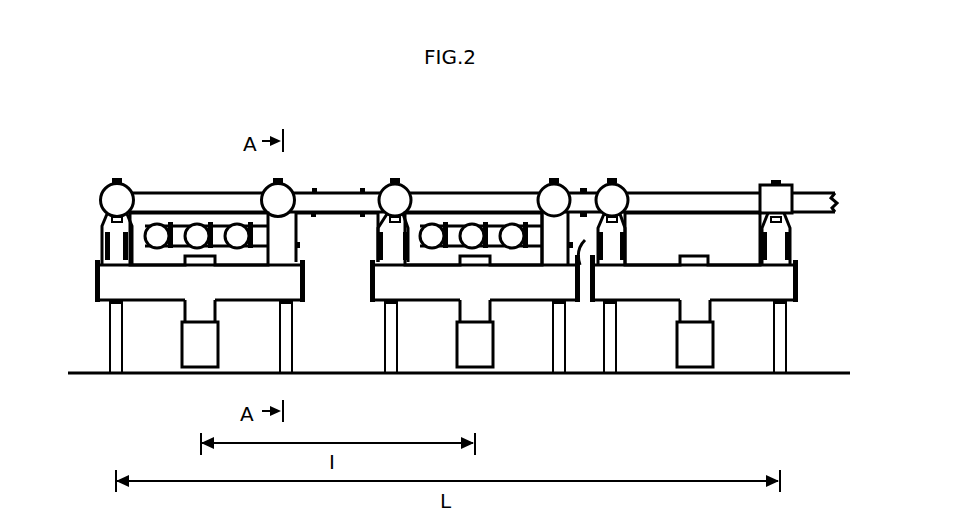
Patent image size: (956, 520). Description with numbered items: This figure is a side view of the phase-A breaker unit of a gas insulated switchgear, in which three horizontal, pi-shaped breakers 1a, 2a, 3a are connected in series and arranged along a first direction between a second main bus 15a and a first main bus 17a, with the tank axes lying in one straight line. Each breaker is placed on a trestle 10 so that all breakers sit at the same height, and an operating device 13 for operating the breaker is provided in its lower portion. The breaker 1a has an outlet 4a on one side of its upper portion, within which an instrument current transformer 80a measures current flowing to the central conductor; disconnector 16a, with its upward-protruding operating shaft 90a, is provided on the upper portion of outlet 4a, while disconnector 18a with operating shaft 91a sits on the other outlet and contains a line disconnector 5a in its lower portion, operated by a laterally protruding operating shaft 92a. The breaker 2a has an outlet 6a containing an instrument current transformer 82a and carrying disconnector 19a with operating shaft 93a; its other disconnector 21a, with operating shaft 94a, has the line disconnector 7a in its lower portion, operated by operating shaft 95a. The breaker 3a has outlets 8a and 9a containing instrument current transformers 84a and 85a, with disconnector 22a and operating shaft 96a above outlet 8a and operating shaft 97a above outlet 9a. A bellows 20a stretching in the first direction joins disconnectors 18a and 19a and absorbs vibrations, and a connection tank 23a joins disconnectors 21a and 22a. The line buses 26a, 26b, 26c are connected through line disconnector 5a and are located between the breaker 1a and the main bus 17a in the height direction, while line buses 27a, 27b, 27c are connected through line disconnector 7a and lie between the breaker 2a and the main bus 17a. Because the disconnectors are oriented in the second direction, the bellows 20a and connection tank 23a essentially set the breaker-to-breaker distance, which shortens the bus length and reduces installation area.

The breaker 1a is at (150, 303).
The breaker 2a is at (420, 303).
The breaker 3a is at (643, 303).
The outlet 4a is at (106, 245).
The line disconnector 5a is at (305, 268).
The outlet 6a is at (380, 246).
The line disconnector 7a is at (555, 262).
The outlet 8a is at (615, 248).
The outlet 9a is at (778, 245).
The trestle 10 is at (116, 350).
The operating device 13 is at (203, 350).
The main bus 15a is at (818, 200).
The disconnector 16a is at (112, 193).
The main bus 17a is at (142, 200).
The disconnector 18a is at (290, 192).
The disconnector 19a is at (388, 185).
The bellows 20a is at (353, 191).
The disconnector 21a is at (542, 187).
The disconnector 22a is at (623, 188).
The connection tank 23a is at (583, 152).
The line bus 26a is at (237, 226).
The line bus 26b is at (197, 226).
The line bus 26c is at (157, 226).
The line bus 27a is at (512, 226).
The line bus 27b is at (472, 226).
The line bus 27c is at (432, 226).
The instrument current transformer 80a is at (100, 255).
The instrument current transformer 82a is at (408, 245).
The instrument current transformer 84a is at (627, 240).
The instrument current transformer 85a is at (790, 262).
The operating shaft 90a is at (118, 178).
The operating shaft 91a is at (278, 178).
The operating shaft 92a is at (300, 245).
The operating shaft 93a is at (396, 178).
The operating shaft 94a is at (555, 180).
The operating shaft 95a is at (578, 255).
The operating shaft 96a is at (610, 180).
The operating shaft 97a is at (777, 180).